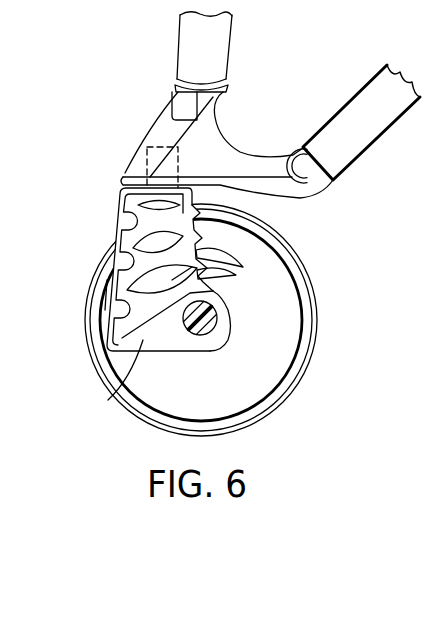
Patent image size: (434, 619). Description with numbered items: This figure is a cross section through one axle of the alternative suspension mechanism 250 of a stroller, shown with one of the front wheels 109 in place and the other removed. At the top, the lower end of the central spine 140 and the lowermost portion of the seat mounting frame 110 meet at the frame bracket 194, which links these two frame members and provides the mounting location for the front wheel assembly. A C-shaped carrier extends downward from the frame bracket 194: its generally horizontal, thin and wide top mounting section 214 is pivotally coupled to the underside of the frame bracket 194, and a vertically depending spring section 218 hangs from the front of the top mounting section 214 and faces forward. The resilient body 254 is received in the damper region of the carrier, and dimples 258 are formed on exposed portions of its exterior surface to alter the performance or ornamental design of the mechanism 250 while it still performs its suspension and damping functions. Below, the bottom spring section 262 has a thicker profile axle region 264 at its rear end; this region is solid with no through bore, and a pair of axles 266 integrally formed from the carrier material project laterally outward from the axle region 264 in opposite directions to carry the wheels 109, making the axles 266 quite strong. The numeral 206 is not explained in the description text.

The wheel 109 is at (288, 336).
The seat mounting frame 110 is at (215, 48).
The central spine 140 is at (370, 98).
The frame bracket 194 is at (237, 157).
The top mounting section 214 is at (140, 190).
The vertically depending spring section 218 is at (103, 290).
The suspension mechanism 250 is at (96, 244).
The resilient body 254 is at (198, 218).
The dimples 258 is at (239, 271).
The openings 206 is at (143, 305).
The axle region 264 is at (213, 338).
The axles 266 is at (220, 317).
The bottom spring section 262 is at (110, 396).